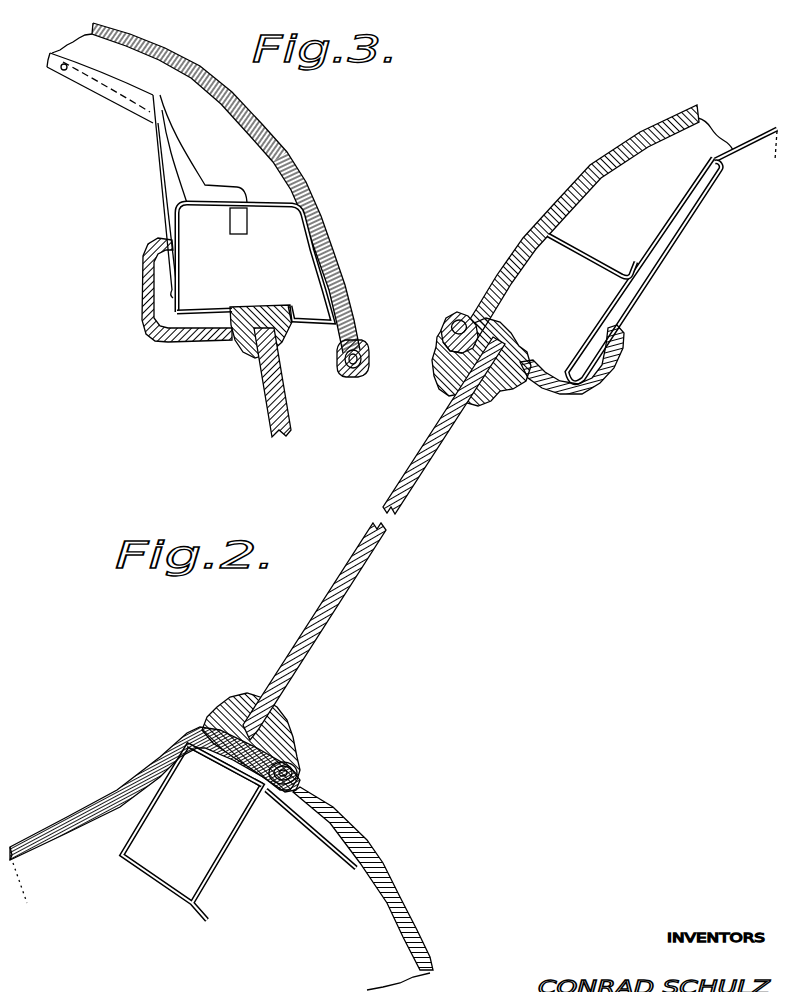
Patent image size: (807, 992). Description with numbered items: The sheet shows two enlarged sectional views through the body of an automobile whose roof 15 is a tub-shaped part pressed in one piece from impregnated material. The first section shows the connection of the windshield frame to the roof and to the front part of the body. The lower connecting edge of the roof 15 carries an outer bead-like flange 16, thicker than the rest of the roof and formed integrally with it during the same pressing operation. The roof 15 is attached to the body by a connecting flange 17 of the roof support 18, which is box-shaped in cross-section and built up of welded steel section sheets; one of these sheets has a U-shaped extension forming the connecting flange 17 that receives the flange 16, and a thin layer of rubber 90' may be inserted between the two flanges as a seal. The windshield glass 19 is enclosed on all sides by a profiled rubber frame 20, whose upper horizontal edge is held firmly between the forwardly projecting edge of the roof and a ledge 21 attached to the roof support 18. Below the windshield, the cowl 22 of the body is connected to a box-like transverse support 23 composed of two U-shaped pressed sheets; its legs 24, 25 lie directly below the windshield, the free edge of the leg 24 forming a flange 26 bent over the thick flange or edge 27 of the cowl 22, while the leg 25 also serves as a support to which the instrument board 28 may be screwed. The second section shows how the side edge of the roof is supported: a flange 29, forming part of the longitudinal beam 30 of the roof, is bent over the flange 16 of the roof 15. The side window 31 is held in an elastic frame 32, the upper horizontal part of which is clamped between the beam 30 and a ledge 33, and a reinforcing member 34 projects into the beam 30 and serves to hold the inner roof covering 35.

In FIG. 3, the roof 15 is at (280, 165).
In FIG. 2, the roof 15 is at (540, 228).
In FIG. 3, the bead-like flange 16 is at (368, 342).
In FIG. 2, the bead-like flange 16 is at (440, 347).
In FIG. 2, the connecting flange 17 is at (448, 328).
In FIG. 2, the roof support 18 is at (599, 300).
In FIG. 2, the windshield glass 19 is at (416, 483).
In FIG. 2, the profiled rubber frame 20 is at (519, 390).
In FIG. 2, the ledge 21 is at (606, 368).
In FIG. 2, the cowl 22 is at (180, 736).
In FIG. 2, the transverse support 23 is at (190, 858).
In FIG. 2, the leg 24 is at (220, 755).
In FIG. 2, the leg 25 is at (293, 803).
In FIG. 2, the flange 26 is at (302, 774).
In FIG. 2, the thick flange or edge 27 is at (300, 768).
In FIG. 2, the instrument board 28 is at (394, 862).
In FIG. 3, the flange 29 is at (368, 375).
In FIG. 3, the longitudinal beam 30 is at (296, 256).
In FIG. 3, the side window 31 is at (283, 410).
In FIG. 3, the elastic frame 32 is at (243, 350).
In FIG. 3, the ledge 33 is at (151, 333).
In FIG. 3, the reinforcing member 34 is at (195, 156).
In FIG. 3, the inner roof covering 35 is at (153, 180).
In FIG. 2, the thin layer of rubber 90' is at (463, 297).